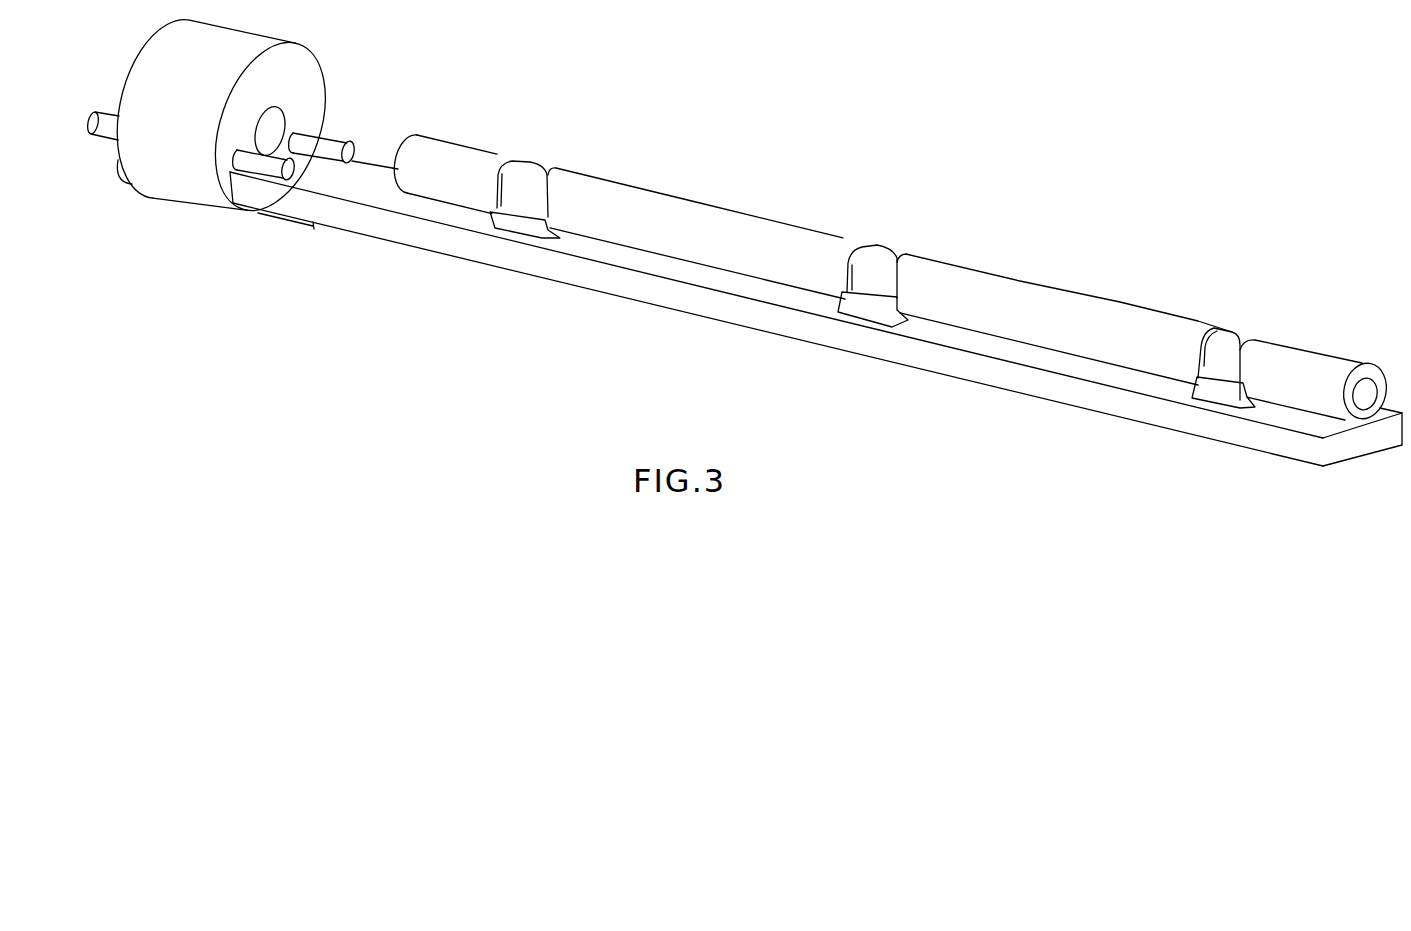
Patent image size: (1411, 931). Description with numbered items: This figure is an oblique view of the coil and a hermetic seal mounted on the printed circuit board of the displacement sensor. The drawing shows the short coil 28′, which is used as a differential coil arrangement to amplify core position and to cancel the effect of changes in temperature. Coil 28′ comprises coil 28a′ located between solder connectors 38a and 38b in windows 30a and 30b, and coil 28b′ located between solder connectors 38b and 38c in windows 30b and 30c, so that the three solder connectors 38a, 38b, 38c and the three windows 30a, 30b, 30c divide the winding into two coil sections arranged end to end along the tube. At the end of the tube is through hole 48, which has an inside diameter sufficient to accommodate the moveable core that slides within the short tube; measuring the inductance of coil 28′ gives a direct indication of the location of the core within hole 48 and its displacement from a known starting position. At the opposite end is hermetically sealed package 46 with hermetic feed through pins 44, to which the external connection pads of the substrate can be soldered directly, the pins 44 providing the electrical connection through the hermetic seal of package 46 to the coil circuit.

The short coil 28′ is at (970, 247).
The coil 28a′ is at (712, 252).
The coil 28b′ is at (1080, 338).
The window 30a is at (537, 180).
The window 30b is at (882, 267).
The window 30c is at (1238, 350).
The solder connector 38a is at (522, 223).
The solder connector 38b is at (873, 312).
The solder connector 38c is at (1227, 390).
The hermetic feed through pin 44 is at (106, 128).
The hermetically sealed package 46 is at (173, 163).
The through hole 48 is at (1367, 397).